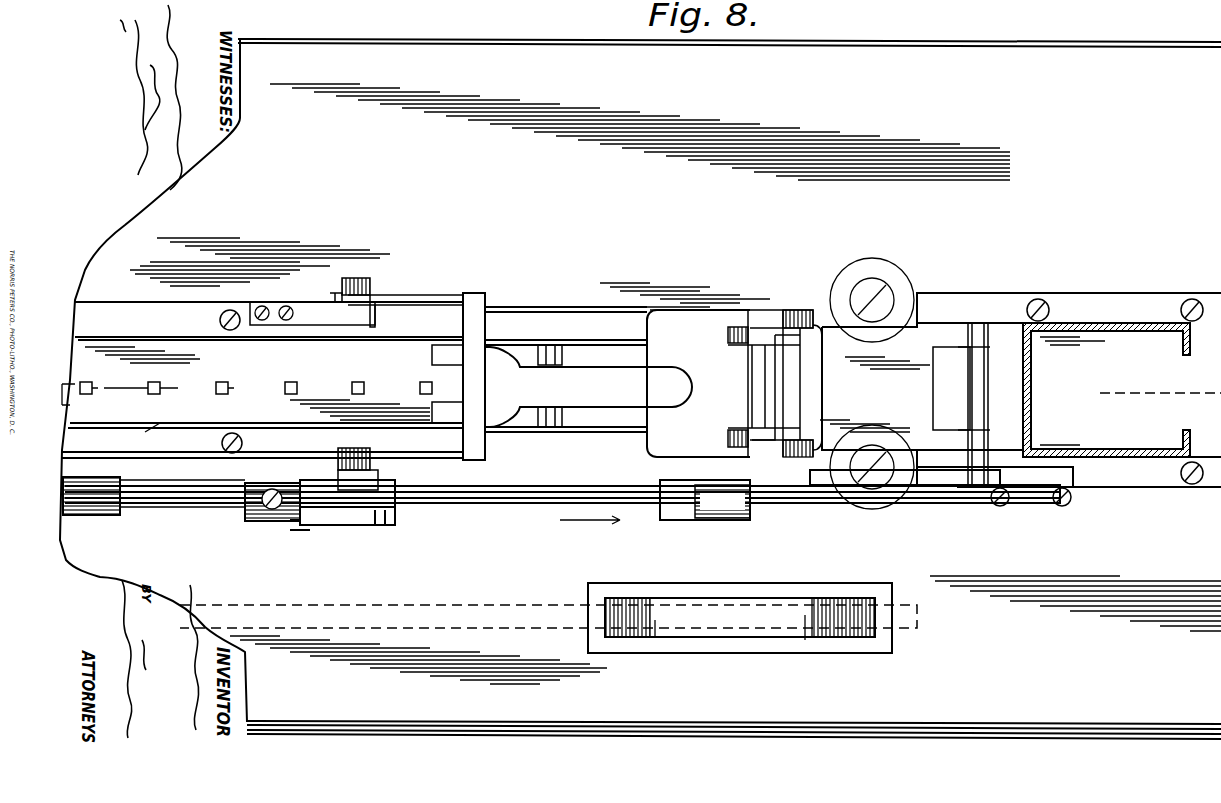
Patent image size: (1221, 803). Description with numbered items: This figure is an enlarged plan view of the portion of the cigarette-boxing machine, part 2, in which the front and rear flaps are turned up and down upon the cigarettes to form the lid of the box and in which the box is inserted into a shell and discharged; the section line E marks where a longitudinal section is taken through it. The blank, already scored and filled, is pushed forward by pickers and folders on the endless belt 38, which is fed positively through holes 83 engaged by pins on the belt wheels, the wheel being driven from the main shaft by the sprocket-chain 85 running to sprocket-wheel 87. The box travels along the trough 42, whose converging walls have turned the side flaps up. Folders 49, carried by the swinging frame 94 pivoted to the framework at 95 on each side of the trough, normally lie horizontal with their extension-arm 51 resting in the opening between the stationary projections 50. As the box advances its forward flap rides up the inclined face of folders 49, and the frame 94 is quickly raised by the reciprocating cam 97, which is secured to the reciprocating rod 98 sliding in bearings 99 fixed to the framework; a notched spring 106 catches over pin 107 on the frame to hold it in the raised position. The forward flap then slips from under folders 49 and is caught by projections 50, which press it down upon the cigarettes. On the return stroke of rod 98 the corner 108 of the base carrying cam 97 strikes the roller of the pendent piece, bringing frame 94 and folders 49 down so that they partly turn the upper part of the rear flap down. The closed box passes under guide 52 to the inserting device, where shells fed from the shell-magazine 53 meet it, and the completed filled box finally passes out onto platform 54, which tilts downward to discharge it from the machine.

The part of the machine 2 is at (1063, 131).
The endless belt 38 is at (262, 380).
The trough 42 is at (149, 438).
The folder 49 is at (432, 355).
The projections 50 is at (562, 352).
The extension-arm 51 is at (588, 369).
The guide 52 is at (734, 383).
The shell-magazine 53 is at (1090, 324).
The platform 54 is at (922, 383).
The holes 83 is at (230, 386).
The sprocket-chain 85 is at (510, 605).
The sprocket-wheel 87 is at (740, 618).
The swinging frame 94 is at (465, 296).
The pivot 95 is at (372, 282).
The reciprocating cam 97 is at (345, 530).
The reciprocating rod 98 is at (513, 503).
The bearings 99 is at (120, 510).
The spring 106 is at (312, 313).
The pin 107 is at (330, 298).
The corner of the base 108 is at (245, 485).
The section line E E is at (641, 406).